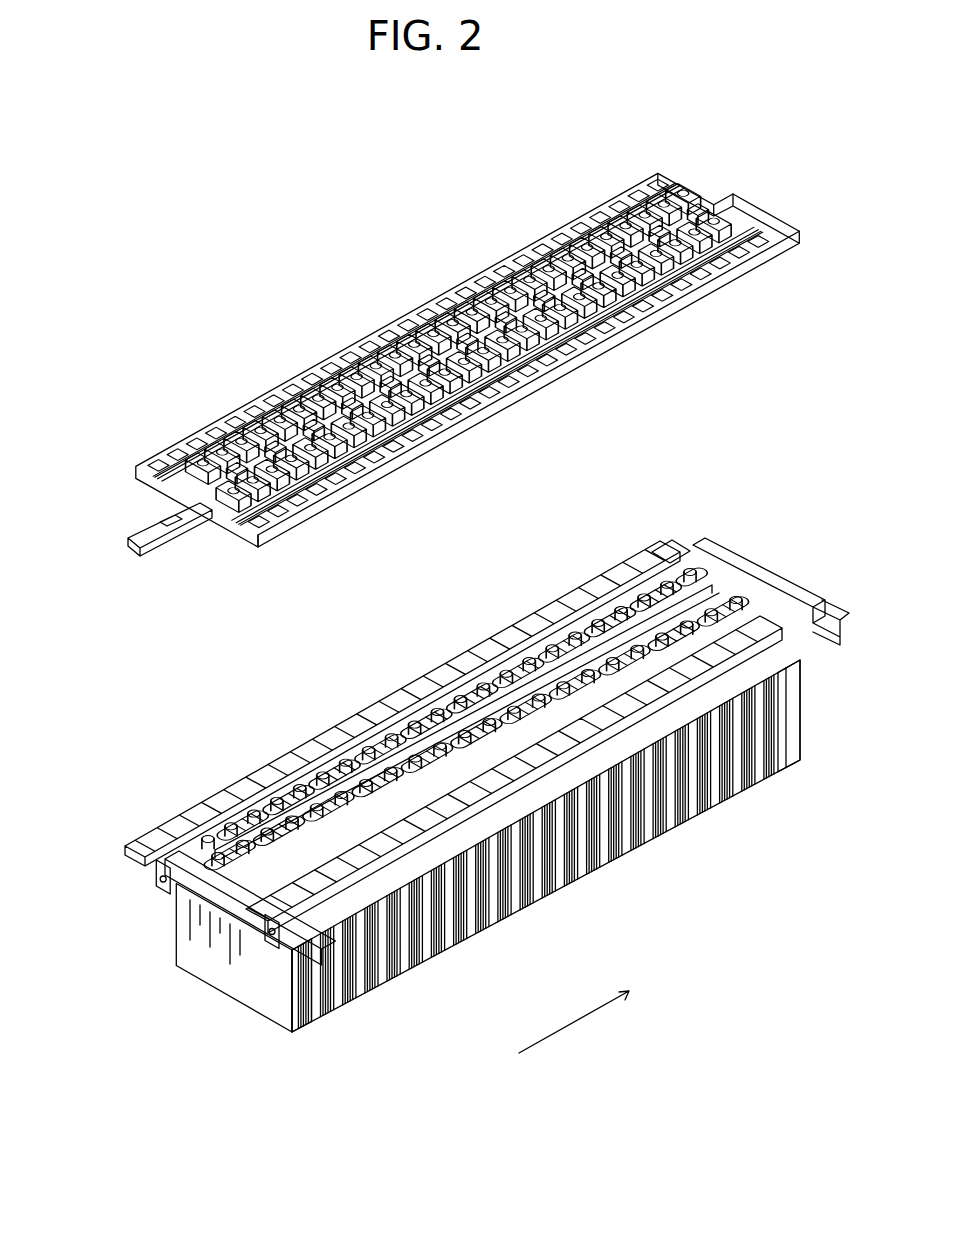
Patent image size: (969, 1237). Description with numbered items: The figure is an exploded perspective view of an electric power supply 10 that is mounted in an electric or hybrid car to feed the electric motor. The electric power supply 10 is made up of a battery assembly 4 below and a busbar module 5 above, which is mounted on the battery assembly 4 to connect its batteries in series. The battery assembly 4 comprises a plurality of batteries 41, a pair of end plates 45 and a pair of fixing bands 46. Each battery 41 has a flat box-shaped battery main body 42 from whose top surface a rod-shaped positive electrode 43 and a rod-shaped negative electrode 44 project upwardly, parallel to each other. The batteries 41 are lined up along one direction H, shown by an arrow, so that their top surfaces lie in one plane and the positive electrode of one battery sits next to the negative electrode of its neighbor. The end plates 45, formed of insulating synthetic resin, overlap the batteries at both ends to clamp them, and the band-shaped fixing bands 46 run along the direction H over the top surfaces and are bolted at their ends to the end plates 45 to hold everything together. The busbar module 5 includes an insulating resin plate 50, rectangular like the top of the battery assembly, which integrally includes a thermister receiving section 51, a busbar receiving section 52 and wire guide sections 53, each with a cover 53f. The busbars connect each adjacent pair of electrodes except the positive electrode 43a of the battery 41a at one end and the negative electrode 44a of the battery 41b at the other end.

The electric power supply 10 is at (722, 88).
The busbar module 5 is at (769, 184).
The plate 50 is at (770, 270).
The thermister receiving section 51 is at (382, 395).
The busbar receiving section 52 is at (300, 400).
The wire guide section 53 is at (628, 200).
The cover 53f is at (588, 215).
The battery assembly 4 is at (751, 816).
The battery 41 is at (377, 1025).
The battery located at one end 41a is at (307, 1037).
The battery located at the other end 41b is at (798, 742).
The battery main body 42 is at (790, 736).
The positive electrode 43 is at (285, 822).
The positive electrode of the battery at one end 43a is at (215, 860).
The negative electrode 44 is at (300, 800).
The negative electrode of the battery at the other end 44a is at (703, 560).
The end plate 45 is at (215, 900).
The fixing band 46 is at (158, 882).
The one direction H is at (574, 1042).